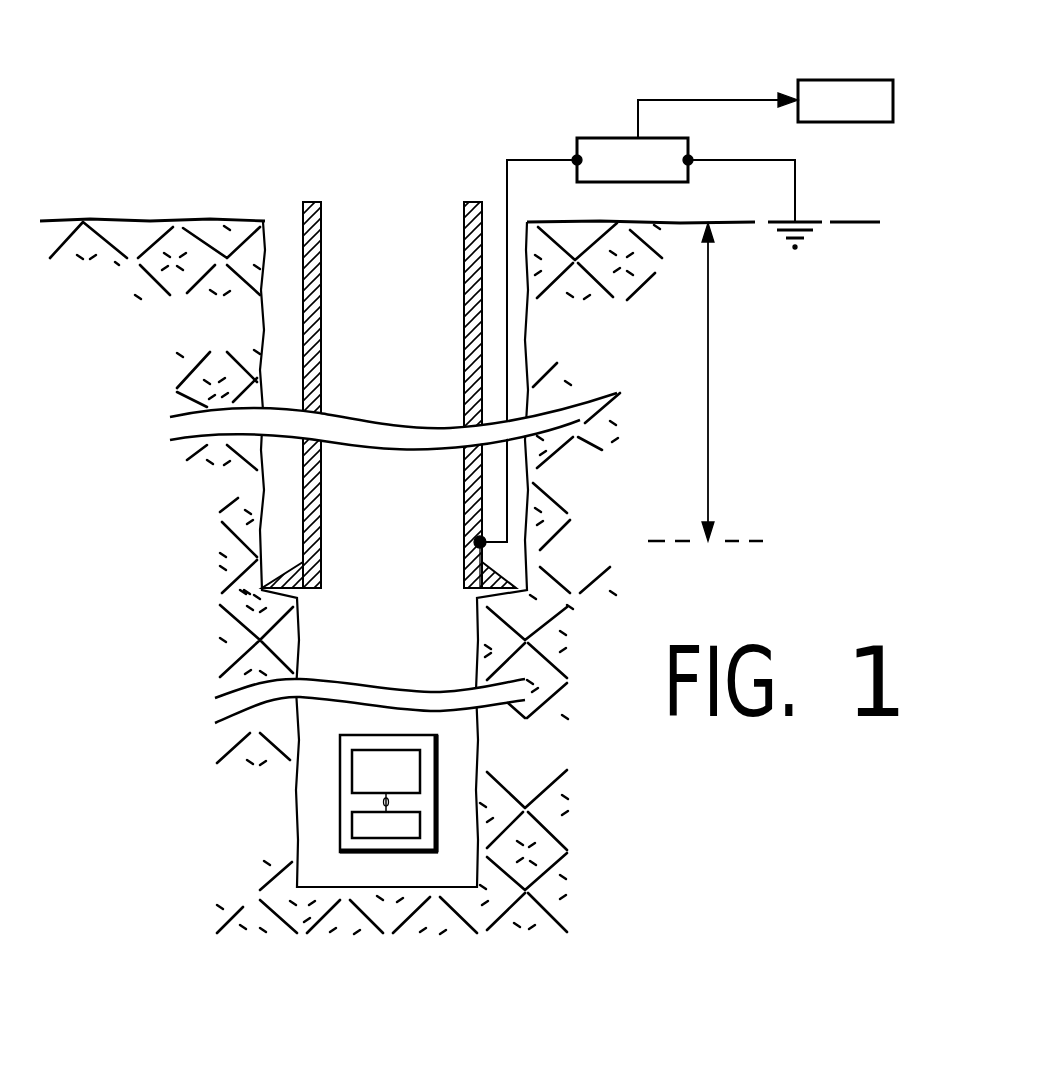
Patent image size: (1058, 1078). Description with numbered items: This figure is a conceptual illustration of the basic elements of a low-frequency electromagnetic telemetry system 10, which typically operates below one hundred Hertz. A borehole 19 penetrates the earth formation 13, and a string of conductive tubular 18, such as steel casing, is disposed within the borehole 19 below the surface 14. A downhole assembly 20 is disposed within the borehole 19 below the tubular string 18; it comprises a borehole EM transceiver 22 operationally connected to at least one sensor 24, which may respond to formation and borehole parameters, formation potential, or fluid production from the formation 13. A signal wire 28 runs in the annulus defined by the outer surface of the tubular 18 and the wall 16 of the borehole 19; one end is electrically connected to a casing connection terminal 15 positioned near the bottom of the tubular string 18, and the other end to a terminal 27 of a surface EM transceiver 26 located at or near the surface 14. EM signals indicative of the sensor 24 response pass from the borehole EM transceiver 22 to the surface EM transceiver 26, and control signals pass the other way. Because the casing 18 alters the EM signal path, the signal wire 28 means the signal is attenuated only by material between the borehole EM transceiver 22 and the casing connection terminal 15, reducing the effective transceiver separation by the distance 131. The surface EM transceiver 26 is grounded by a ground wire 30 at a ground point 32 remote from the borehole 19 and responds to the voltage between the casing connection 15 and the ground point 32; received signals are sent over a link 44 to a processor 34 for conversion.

The system 10 is at (593, 86).
The earth formation 13 is at (204, 533).
The surface 14 is at (142, 220).
The casing connection terminal 15 is at (480, 542).
The wall of the borehole 16 is at (263, 250).
The tubular string 18 is at (303, 335).
The borehole 19 is at (270, 485).
The downhole assembly 20 is at (437, 750).
The borehole EM transceiver 22 is at (351, 768).
The sensor 24 is at (352, 825).
The surface EM transceiver 26 is at (668, 138).
The terminal 27 is at (577, 160).
The signal wire 28 is at (507, 332).
The ground wire 30 is at (770, 160).
The ground point 32 is at (800, 222).
The processor 34 is at (850, 80).
The link 44 is at (680, 100).
The distance 131 is at (708, 378).